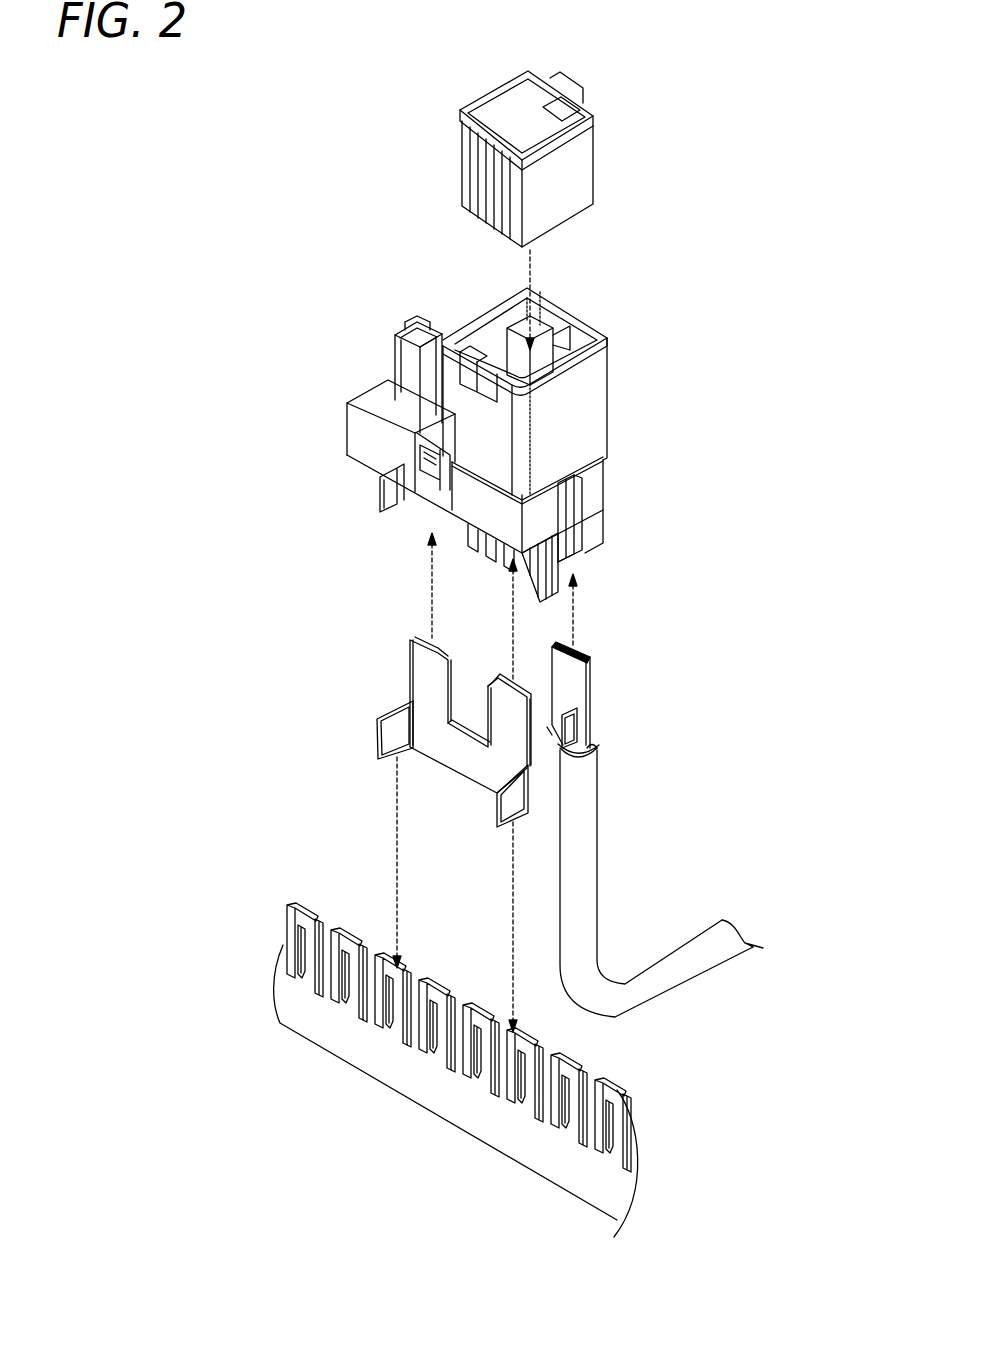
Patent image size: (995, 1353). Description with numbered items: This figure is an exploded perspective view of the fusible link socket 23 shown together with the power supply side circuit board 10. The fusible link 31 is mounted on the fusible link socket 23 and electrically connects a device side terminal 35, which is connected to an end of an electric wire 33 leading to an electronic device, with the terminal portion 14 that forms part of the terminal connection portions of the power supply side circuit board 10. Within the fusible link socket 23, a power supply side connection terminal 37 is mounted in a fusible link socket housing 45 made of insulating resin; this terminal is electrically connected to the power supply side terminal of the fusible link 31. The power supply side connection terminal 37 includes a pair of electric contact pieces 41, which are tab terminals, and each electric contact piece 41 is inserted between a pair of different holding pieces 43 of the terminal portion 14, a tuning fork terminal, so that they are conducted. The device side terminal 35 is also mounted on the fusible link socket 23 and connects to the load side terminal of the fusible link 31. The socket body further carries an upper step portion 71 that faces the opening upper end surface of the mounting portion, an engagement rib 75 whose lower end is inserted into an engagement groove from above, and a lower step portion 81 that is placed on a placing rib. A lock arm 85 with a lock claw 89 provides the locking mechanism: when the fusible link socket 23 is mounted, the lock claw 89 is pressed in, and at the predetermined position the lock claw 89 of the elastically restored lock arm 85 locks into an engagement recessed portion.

The power supply side circuit board 10 is at (292, 1007).
The terminal portion 14 is at (303, 892).
The fusible link socket 23 is at (249, 527).
The fusible link 31 is at (503, 99).
The electric wire 33 is at (688, 982).
The device side terminal 35 is at (578, 682).
The power supply side connection terminal 37 is at (406, 658).
The electric contact pieces 41 is at (392, 742).
The holding pieces 43 is at (388, 955).
The fusible link socket housing 45 is at (346, 474).
The upper step portion 71 is at (566, 560).
The engagement rib 75 is at (562, 603).
The lower step portion 81 is at (604, 547).
The lock arm 85 is at (378, 394).
The lock claw 89 is at (428, 488).